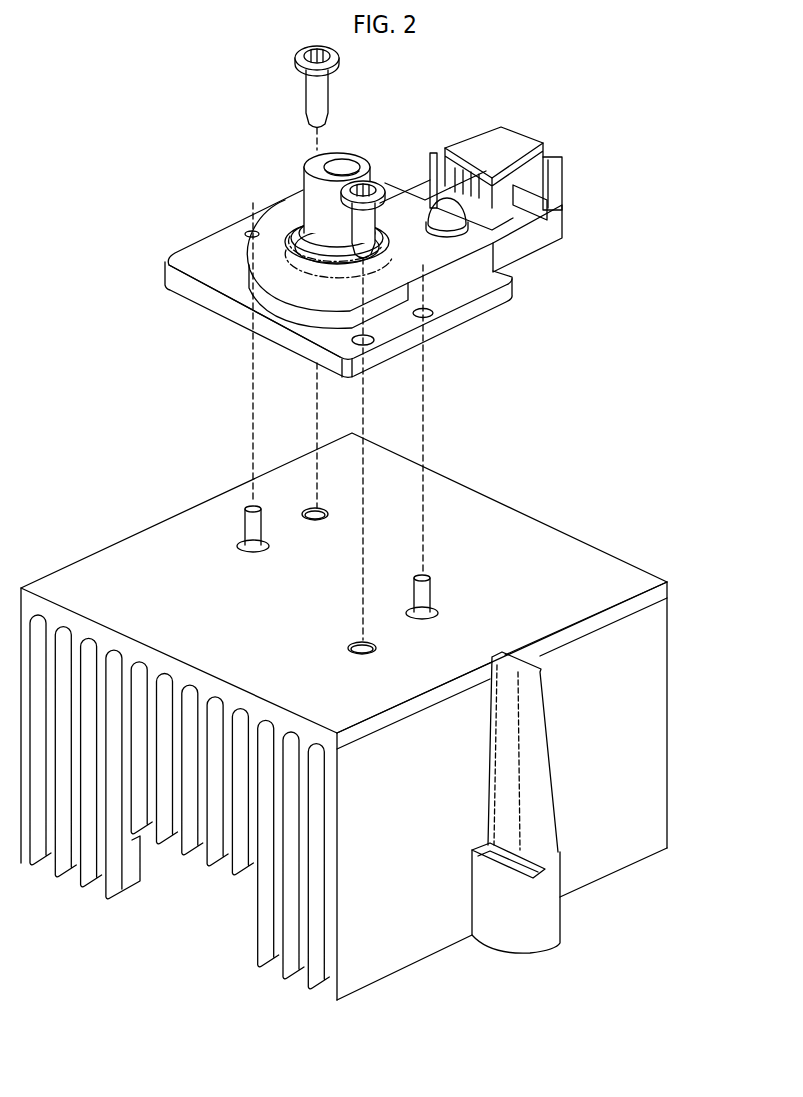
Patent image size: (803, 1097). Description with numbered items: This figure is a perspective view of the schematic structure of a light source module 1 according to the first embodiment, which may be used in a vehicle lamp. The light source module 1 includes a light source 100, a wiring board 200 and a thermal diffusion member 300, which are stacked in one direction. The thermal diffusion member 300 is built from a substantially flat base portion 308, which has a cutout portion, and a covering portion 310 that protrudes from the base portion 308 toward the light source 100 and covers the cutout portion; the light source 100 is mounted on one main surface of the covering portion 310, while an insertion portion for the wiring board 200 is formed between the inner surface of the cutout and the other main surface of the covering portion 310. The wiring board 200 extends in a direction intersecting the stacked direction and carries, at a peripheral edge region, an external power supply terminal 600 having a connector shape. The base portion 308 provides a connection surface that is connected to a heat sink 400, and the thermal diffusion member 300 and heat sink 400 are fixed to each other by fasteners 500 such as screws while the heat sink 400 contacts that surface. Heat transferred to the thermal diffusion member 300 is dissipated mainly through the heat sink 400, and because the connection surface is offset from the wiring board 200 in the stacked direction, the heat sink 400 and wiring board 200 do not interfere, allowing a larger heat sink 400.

The light source module 1 is at (668, 150).
The light source 100 is at (356, 152).
The wiring board 200 is at (552, 229).
The thermal diffusion member 300 is at (194, 233).
The base portion 308 is at (197, 292).
The covering portion 310 is at (462, 266).
The heat sink 400 is at (668, 722).
The fasteners 500 is at (296, 56).
The external power supply terminal 600 is at (522, 130).